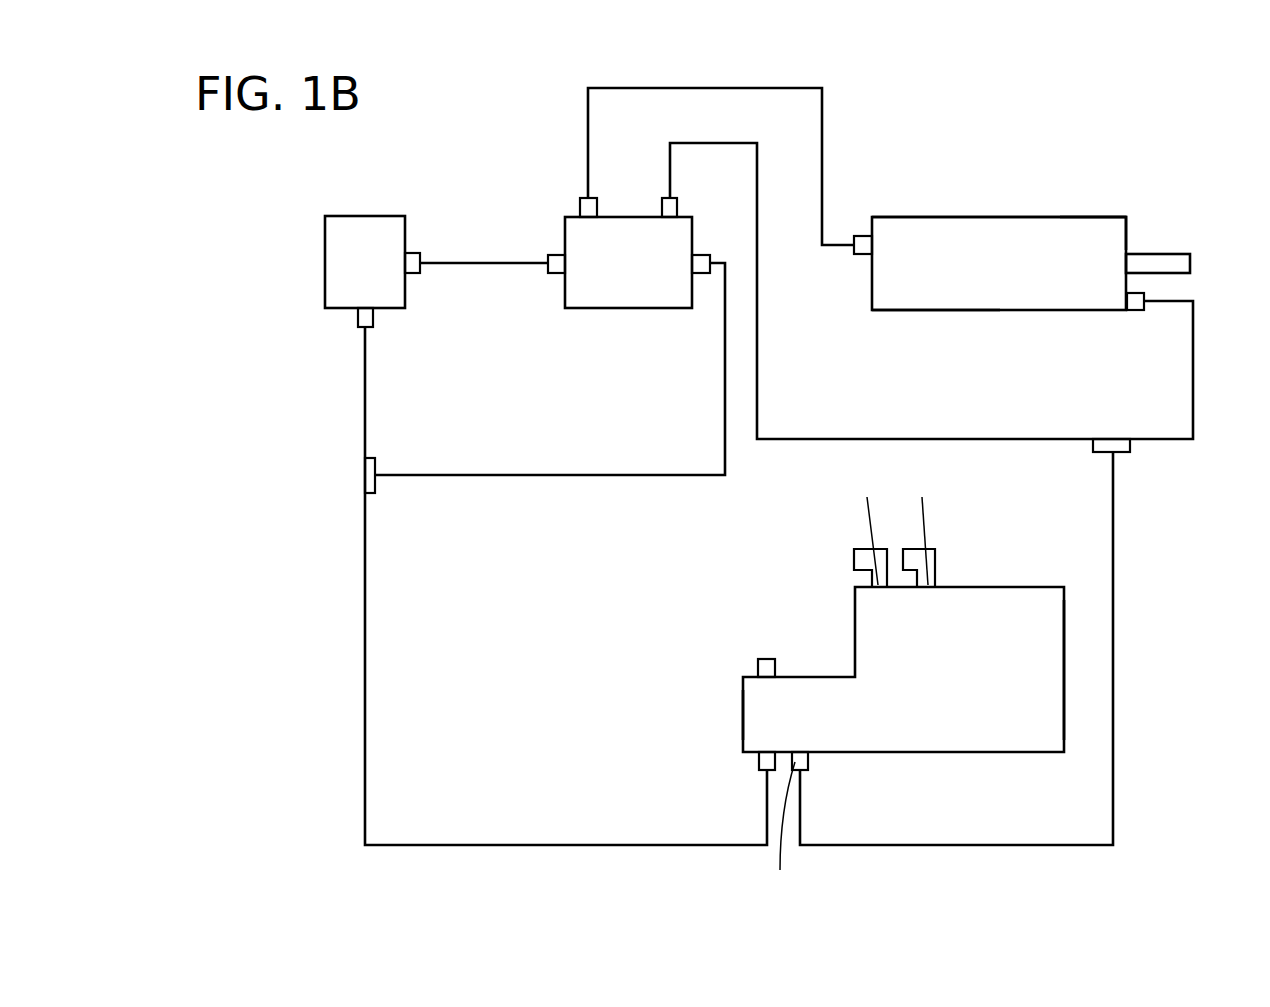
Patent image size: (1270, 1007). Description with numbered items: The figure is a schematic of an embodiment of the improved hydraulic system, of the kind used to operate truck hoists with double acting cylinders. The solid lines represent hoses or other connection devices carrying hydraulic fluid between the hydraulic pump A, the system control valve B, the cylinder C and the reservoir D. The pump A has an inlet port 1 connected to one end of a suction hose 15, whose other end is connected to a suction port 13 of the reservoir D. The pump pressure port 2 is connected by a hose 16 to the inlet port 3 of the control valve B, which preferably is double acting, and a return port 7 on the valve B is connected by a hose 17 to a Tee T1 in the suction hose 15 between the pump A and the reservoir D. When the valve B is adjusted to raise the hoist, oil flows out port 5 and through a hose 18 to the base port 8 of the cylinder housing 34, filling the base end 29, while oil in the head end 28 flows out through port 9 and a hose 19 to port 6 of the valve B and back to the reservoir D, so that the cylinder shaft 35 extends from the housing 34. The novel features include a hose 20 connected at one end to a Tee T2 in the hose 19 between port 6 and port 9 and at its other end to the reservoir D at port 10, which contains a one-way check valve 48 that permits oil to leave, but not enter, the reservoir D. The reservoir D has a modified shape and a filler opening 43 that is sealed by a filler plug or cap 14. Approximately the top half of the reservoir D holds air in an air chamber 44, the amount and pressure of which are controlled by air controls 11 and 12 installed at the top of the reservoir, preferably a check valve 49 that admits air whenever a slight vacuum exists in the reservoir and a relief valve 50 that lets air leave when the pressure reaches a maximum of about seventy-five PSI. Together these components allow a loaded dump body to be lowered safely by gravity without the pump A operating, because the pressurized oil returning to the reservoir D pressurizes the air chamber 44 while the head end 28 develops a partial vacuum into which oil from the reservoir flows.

The hydraulic pump A is at (330, 272).
The inlet port 1 is at (358, 320).
The pump pressure port 2 is at (413, 255).
The inlet port 3 is at (553, 255).
The port 5 is at (586, 200).
The port 6 is at (666, 200).
The valve return port 7 is at (701, 264).
The base port 8 is at (861, 238).
The port 9 is at (1137, 310).
The port 10 is at (785, 832).
The air control 11 is at (858, 552).
The air control 12 is at (935, 565).
The suction port 13 is at (758, 760).
The filler plug or cap 14 is at (765, 660).
The suction hose 15 is at (365, 683).
The hose 16 is at (497, 268).
The hose 17 is at (573, 478).
The hose 18 is at (675, 88).
The hose 19 is at (988, 441).
The hose 20 is at (1115, 610).
The head end 28 is at (1088, 232).
The base end 29 is at (920, 292).
The cylinder housing 34 is at (928, 217).
The cylinder shaft 35 is at (1163, 265).
The filler opening 43 is at (762, 684).
The air chamber 44 is at (1040, 656).
The one-way check valve 48 is at (808, 760).
The check valve 49 is at (862, 527).
The relief valve 50 is at (922, 527).
The system control valve B is at (622, 298).
The cylinder C is at (1015, 228).
The reservoir D is at (1008, 605).
The Tee T1 is at (365, 472).
The Tee T2 is at (1128, 445).